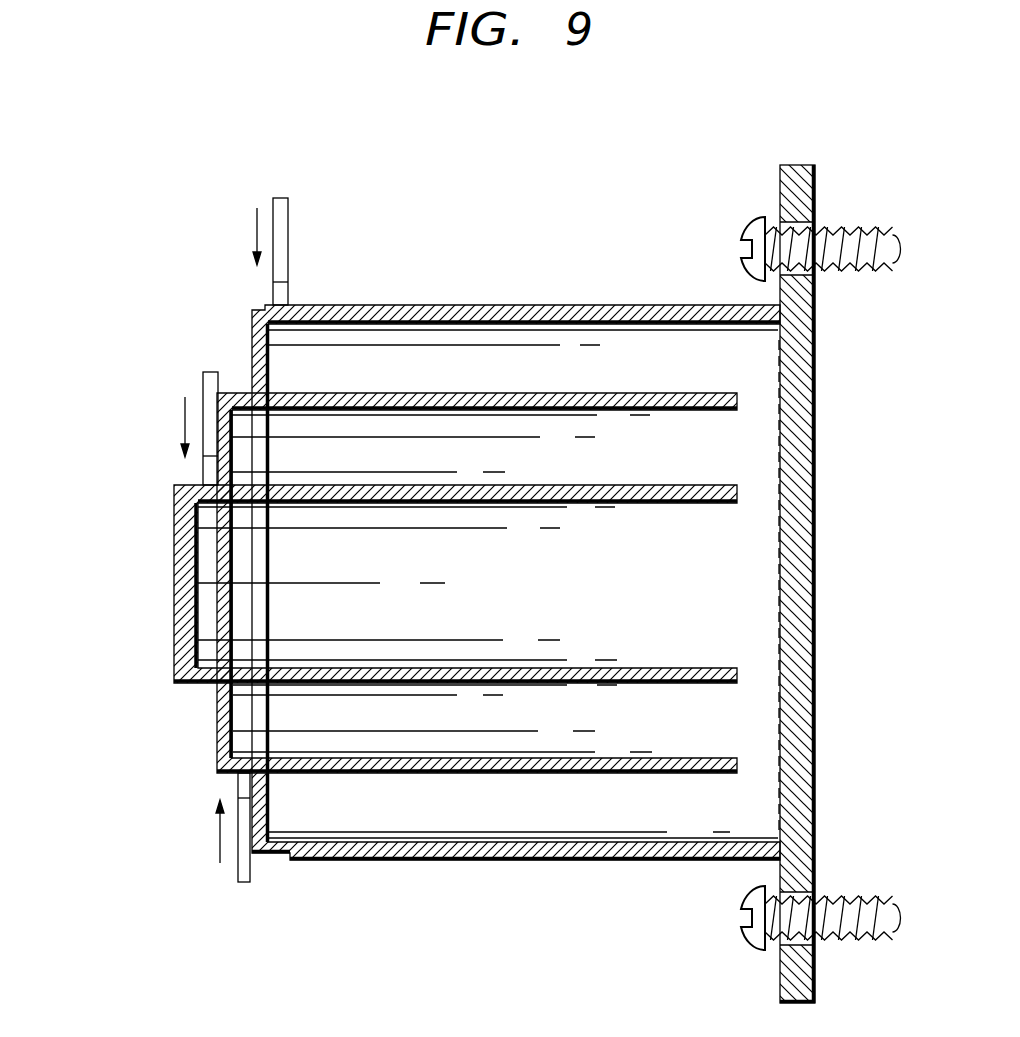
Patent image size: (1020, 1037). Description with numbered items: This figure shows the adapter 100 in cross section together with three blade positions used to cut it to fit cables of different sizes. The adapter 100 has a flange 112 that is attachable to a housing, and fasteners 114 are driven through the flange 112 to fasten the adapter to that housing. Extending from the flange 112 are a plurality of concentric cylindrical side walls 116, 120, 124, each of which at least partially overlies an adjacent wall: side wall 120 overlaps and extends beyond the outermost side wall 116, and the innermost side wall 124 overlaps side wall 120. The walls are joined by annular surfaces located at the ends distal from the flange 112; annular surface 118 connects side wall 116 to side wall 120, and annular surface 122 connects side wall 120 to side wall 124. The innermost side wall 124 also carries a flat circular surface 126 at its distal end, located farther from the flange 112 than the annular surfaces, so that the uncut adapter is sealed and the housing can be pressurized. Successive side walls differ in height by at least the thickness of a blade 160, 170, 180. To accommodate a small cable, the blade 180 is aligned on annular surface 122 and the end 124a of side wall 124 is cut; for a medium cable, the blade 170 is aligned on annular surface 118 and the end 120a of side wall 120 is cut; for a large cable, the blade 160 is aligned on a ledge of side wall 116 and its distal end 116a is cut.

The adapter 100 is at (500, 177).
The flange 112 is at (777, 178).
The fasteners 114 is at (740, 255).
The side wall 116 is at (575, 304).
The distal end 116a is at (260, 307).
The annular surface 118 is at (250, 340).
The side wall 120 is at (636, 394).
The end 120a is at (227, 775).
The annular surface 122 is at (217, 713).
The side wall 124 is at (613, 487).
The end 124a is at (197, 485).
The flat circular surface 126 is at (177, 570).
The blade 160 is at (288, 220).
The blade 170 is at (253, 875).
The blade 180 is at (222, 381).